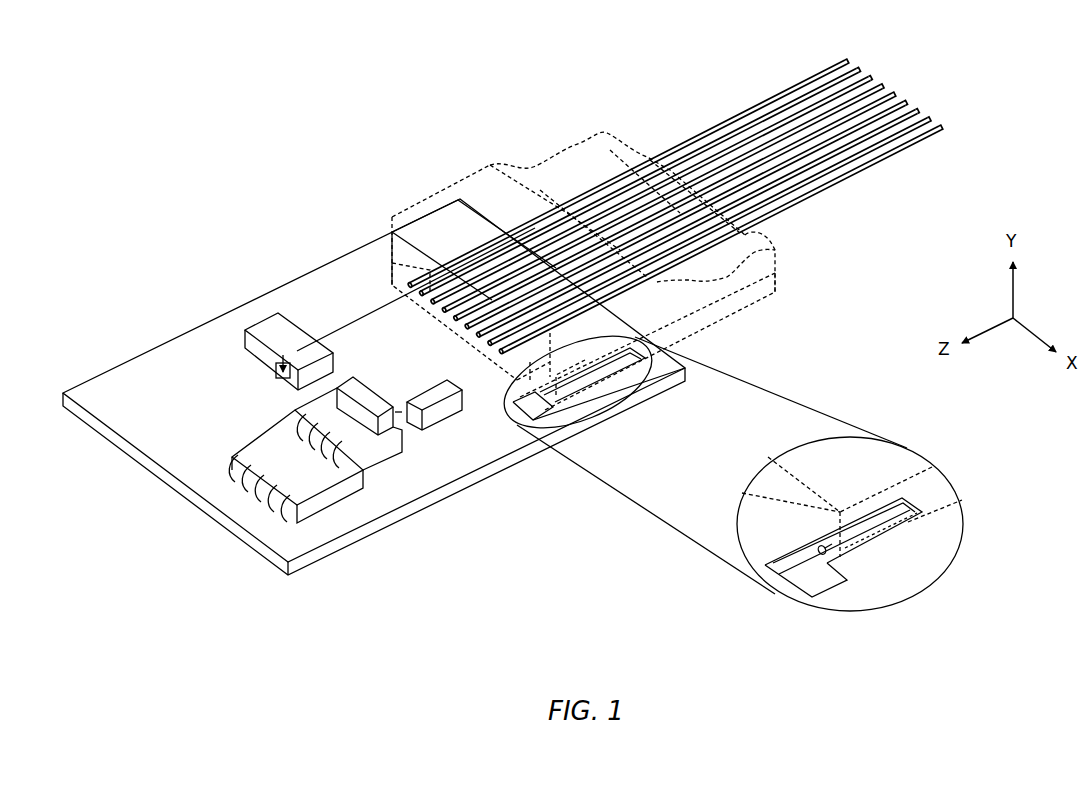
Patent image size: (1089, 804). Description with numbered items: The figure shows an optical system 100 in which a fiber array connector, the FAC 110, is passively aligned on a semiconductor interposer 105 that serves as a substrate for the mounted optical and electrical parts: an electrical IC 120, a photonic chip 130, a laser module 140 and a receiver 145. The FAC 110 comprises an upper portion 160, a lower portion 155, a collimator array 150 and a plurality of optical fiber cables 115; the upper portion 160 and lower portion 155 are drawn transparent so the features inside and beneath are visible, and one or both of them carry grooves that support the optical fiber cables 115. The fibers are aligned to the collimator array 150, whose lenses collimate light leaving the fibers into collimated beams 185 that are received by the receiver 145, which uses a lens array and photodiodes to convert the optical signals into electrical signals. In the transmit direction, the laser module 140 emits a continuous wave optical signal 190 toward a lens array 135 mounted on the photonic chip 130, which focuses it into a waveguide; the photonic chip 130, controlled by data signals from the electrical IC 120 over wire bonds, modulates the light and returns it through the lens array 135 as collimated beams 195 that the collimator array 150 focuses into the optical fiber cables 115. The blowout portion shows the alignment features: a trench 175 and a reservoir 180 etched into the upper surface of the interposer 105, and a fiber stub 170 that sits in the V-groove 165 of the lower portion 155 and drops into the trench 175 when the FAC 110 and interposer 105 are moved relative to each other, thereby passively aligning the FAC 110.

The optical system 100 is at (285, 88).
The semiconductor interposer 105 is at (137, 357).
The fiber array connector (FAC) 110 is at (488, 158).
The optical fiber cables 115 is at (908, 90).
The electrical integrated circuit (IC) 120 is at (263, 445).
The photonic chip 130 is at (318, 402).
The lens array 135 is at (348, 380).
The laser module 140 is at (428, 392).
The receiver 145 is at (257, 348).
The collimator array 150 is at (417, 262).
The lower portion 155 is at (755, 303).
The upper portion 160 is at (757, 237).
The V-groove 165 is at (815, 558).
The fiber stub 170 is at (855, 537).
The trench 175 is at (908, 523).
The reservoir 180 is at (826, 578).
The collimated beams 185 is at (383, 308).
The continuous wave (CW) optical signal 190 is at (399, 414).
The collimated beams 195 is at (476, 340).